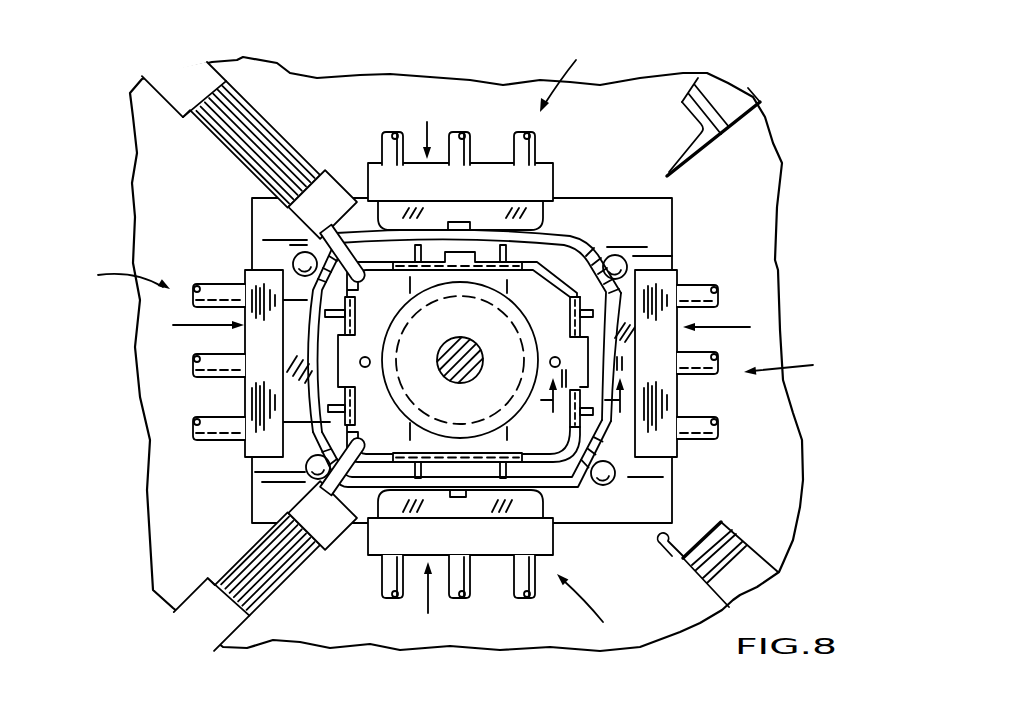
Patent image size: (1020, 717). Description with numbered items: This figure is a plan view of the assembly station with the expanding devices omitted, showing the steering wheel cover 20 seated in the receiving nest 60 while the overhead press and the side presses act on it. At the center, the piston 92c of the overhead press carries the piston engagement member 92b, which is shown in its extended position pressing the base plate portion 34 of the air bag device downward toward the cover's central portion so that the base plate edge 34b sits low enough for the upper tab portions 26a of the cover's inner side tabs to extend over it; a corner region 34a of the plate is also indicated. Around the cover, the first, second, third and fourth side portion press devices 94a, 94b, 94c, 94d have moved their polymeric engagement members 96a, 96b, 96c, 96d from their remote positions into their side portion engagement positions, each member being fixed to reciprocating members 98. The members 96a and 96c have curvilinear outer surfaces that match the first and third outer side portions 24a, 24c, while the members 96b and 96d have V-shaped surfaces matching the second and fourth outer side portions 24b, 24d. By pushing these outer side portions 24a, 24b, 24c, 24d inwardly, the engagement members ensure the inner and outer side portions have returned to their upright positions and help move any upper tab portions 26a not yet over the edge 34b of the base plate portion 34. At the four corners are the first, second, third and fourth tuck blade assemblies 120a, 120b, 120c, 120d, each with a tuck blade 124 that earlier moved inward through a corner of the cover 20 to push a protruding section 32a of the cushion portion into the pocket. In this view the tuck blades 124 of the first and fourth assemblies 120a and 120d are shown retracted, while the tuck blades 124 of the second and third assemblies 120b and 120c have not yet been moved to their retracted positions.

The steering wheel cover 20 is at (620, 437).
The first outer side portion 24a is at (583, 423).
The second outer side portion 24b is at (517, 490).
The third outer side portion 24c is at (345, 328).
The fourth outer side portion 24d is at (487, 257).
The upper tab portions 26a is at (420, 265).
The cushion portion section 32a is at (347, 550).
The base plate portion 34 is at (541, 303).
The shield upper portion 34a is at (548, 237).
The base plate portion edge 34b is at (563, 477).
The receiving nest 60 is at (262, 212).
The piston engagement member 92b is at (460, 410).
The piston 92c is at (460, 345).
The first side portion press device 94a is at (802, 367).
The second side portion press device 94b is at (604, 605).
The third side portion press device 94c is at (111, 274).
The fourth side portion press device 94d is at (569, 72).
The polymeric engagement member 96a is at (623, 310).
The polymeric engagement member 96b is at (417, 510).
The polymeric engagement member 96c is at (293, 313).
The polymeric engagement member 96d is at (442, 208).
The reciprocating members 98 is at (478, 182).
The first tuck blade assembly 120a is at (780, 545).
The second tuck blade assembly 120b is at (203, 567).
The third tuck blade assembly 120c is at (190, 134).
The fourth tuck blade assembly 120d is at (747, 80).
The tuck blade 124 is at (356, 258).